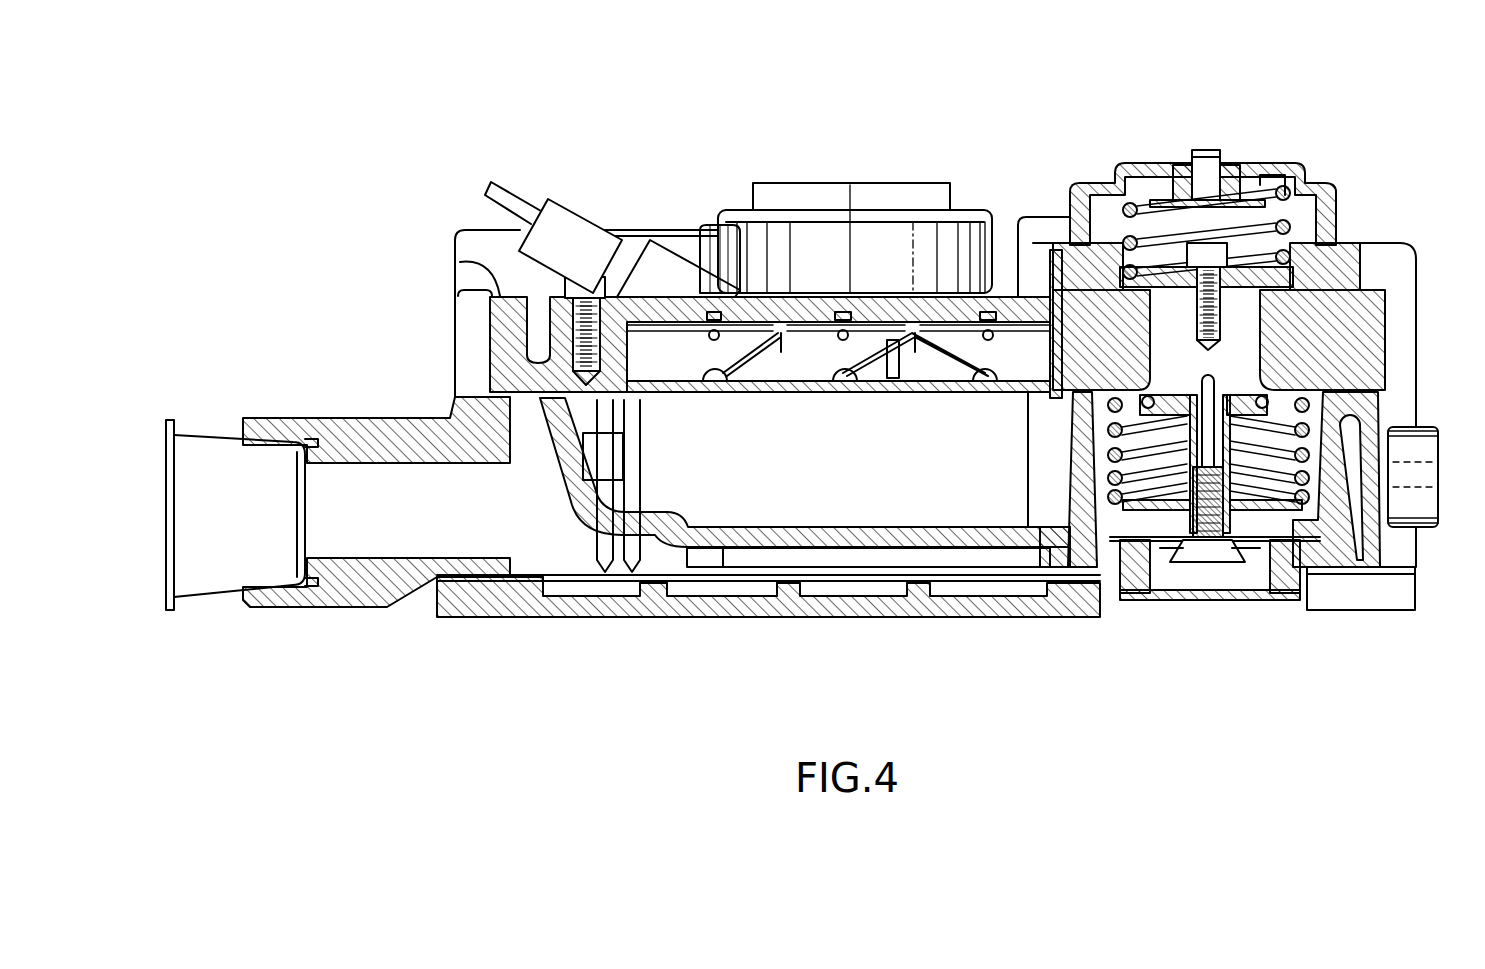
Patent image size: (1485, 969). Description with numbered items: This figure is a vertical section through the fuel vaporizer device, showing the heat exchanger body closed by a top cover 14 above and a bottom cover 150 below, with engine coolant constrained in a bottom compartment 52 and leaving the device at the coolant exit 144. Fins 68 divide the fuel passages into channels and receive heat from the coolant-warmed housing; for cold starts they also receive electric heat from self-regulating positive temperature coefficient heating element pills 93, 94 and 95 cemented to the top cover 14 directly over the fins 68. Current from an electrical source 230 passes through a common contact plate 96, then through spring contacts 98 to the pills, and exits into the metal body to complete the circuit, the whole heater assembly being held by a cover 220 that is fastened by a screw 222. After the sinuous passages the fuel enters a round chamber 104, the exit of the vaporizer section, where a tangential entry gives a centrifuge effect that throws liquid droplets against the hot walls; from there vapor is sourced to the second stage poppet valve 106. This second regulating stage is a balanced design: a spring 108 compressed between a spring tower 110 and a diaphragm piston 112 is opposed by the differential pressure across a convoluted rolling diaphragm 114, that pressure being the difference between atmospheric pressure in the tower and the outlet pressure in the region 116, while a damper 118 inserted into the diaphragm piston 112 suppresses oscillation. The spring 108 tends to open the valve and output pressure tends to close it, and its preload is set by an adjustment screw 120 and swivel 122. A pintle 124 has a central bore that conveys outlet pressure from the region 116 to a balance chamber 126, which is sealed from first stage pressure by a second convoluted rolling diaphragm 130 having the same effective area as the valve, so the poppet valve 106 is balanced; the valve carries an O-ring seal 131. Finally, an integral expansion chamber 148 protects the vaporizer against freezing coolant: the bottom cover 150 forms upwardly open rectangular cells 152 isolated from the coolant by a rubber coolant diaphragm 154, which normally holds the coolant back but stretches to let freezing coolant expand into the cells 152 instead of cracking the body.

The top cover 14 is at (500, 365).
The bottom compartment 52 is at (667, 580).
The fin 68 is at (950, 500).
The PTC heating element pill 93 is at (653, 372).
The PTC heating element pill 94 is at (800, 365).
The PTC heating element pill 95 is at (1023, 357).
The common contact plate 96 is at (857, 368).
The spring contacts 98 is at (853, 393).
The round chamber 104 is at (1103, 497).
The second stage poppet valve 106 is at (1185, 147).
The spring 108 is at (1150, 207).
The spring tower 110 is at (1093, 190).
The diaphragm piston 112 is at (1360, 320).
The convoluted rolling diaphragm 114 is at (1347, 253).
The region 116 is at (1257, 323).
The damper 118 is at (1323, 233).
The adjustment screw 120 is at (1220, 160).
The swivel 122 is at (1268, 172).
The pintle 124 is at (1187, 475).
The balance chamber 126 is at (1190, 580).
The convoluted rolling diaphragm 130 is at (1287, 552).
The O-ring seal 131 is at (1275, 400).
The coolant exit 144 is at (272, 560).
The expansion chamber 148 is at (851, 595).
The bottom cover 150 is at (540, 617).
The rectangular cells 152 is at (510, 598).
The rubber coolant diaphragm 154 is at (692, 615).
The cover 220 is at (657, 232).
The screw 222 is at (543, 290).
The electrical source 230 is at (535, 215).